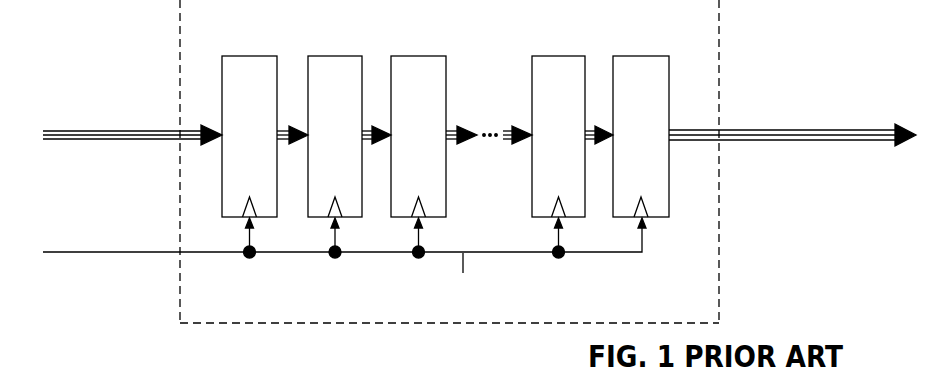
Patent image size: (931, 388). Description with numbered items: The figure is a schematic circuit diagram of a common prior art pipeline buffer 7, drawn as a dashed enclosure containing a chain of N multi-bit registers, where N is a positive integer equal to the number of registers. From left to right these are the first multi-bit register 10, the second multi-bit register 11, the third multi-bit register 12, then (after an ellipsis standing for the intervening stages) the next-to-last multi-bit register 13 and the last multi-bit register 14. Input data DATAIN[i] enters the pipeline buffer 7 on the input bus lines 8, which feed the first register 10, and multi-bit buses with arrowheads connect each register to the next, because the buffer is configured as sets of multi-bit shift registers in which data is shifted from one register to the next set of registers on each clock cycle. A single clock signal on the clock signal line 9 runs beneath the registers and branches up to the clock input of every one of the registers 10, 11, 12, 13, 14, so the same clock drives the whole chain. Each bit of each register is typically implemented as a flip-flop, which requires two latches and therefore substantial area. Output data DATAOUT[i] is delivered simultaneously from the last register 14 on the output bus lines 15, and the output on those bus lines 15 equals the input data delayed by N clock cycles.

The pipeline buffer 7 is at (213, 324).
The input bus lines 8 is at (145, 142).
The clock signal line 9 is at (135, 253).
The multi-bit register REG1 10 is at (262, 63).
The multi-bit register REG2 11 is at (340, 63).
The multi-bit register REG3 12 is at (416, 63).
The multi-bit register REGN-1 13 is at (572, 63).
The multi-bit register REGN 14 is at (658, 63).
The output bus lines 15 is at (757, 143).